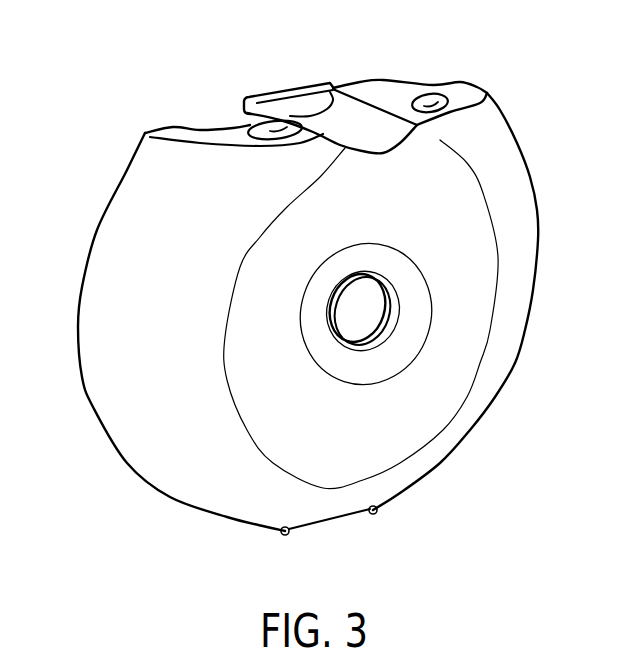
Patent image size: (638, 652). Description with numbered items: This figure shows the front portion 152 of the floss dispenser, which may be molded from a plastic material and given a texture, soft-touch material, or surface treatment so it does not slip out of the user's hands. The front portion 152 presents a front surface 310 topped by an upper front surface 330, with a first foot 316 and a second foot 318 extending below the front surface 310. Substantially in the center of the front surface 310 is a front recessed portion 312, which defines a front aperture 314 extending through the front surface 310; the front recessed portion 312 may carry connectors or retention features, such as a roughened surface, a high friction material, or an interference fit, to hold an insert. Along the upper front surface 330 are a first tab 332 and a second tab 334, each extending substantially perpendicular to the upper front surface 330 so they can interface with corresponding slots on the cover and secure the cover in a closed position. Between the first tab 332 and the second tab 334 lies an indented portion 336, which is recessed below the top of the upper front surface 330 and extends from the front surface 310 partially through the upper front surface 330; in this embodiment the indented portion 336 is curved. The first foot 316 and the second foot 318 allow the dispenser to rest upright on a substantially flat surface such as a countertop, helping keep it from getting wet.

The front portion 152 is at (96, 61).
The front surface 310 is at (107, 413).
The front recessed portion 312 is at (350, 340).
The front aperture 314 is at (372, 296).
The first foot 316 is at (278, 535).
The second foot 318 is at (377, 513).
The upper front surface 330 is at (390, 93).
The first tab 332 is at (437, 100).
The second tab 334 is at (257, 127).
The indented portion 336 is at (365, 120).